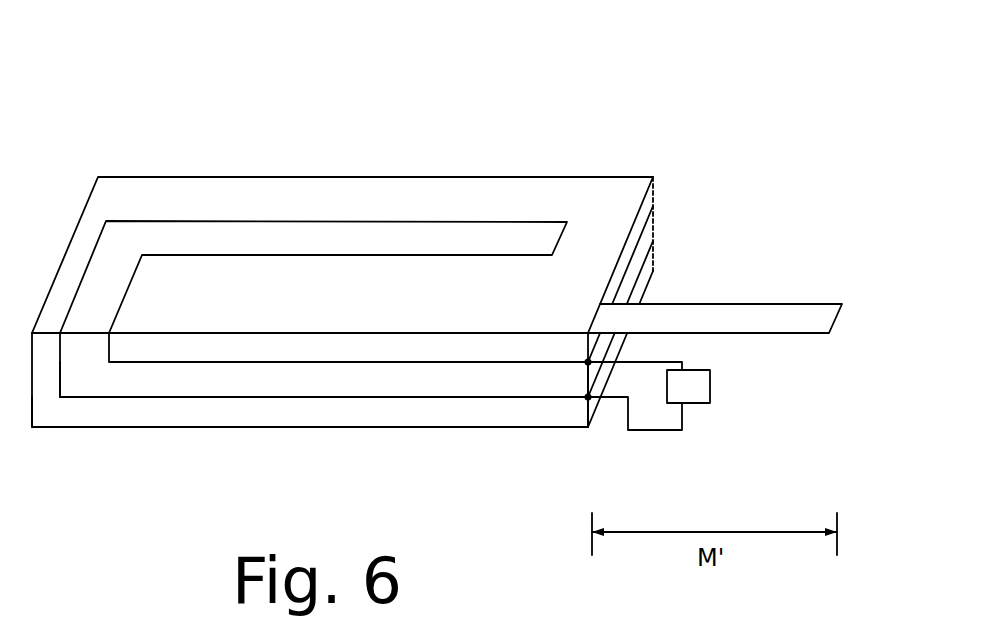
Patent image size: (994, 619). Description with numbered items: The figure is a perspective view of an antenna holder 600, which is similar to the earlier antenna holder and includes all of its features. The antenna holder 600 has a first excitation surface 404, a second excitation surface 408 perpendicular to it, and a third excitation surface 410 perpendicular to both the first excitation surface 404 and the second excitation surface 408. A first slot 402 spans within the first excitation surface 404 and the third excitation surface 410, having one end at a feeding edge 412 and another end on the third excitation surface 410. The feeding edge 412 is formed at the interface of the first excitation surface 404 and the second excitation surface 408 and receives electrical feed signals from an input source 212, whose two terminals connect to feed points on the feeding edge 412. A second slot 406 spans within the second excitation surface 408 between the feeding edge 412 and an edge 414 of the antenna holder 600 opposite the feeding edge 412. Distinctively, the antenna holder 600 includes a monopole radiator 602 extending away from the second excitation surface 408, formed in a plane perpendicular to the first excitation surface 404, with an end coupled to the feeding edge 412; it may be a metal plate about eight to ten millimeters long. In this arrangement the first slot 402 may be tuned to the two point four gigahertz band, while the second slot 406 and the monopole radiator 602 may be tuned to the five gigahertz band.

The antenna holder 600 is at (296, 76).
The third excitation surface 410 is at (597, 205).
The edge 414 is at (656, 204).
The second excitation surface 408 is at (633, 234).
The second slot 406 is at (632, 268).
The first excitation surface 404 is at (113, 405).
The first slot 402 is at (280, 375).
The feeding edge 412 is at (593, 410).
The input source 212 is at (695, 383).
The monopole radiator 602 is at (773, 335).